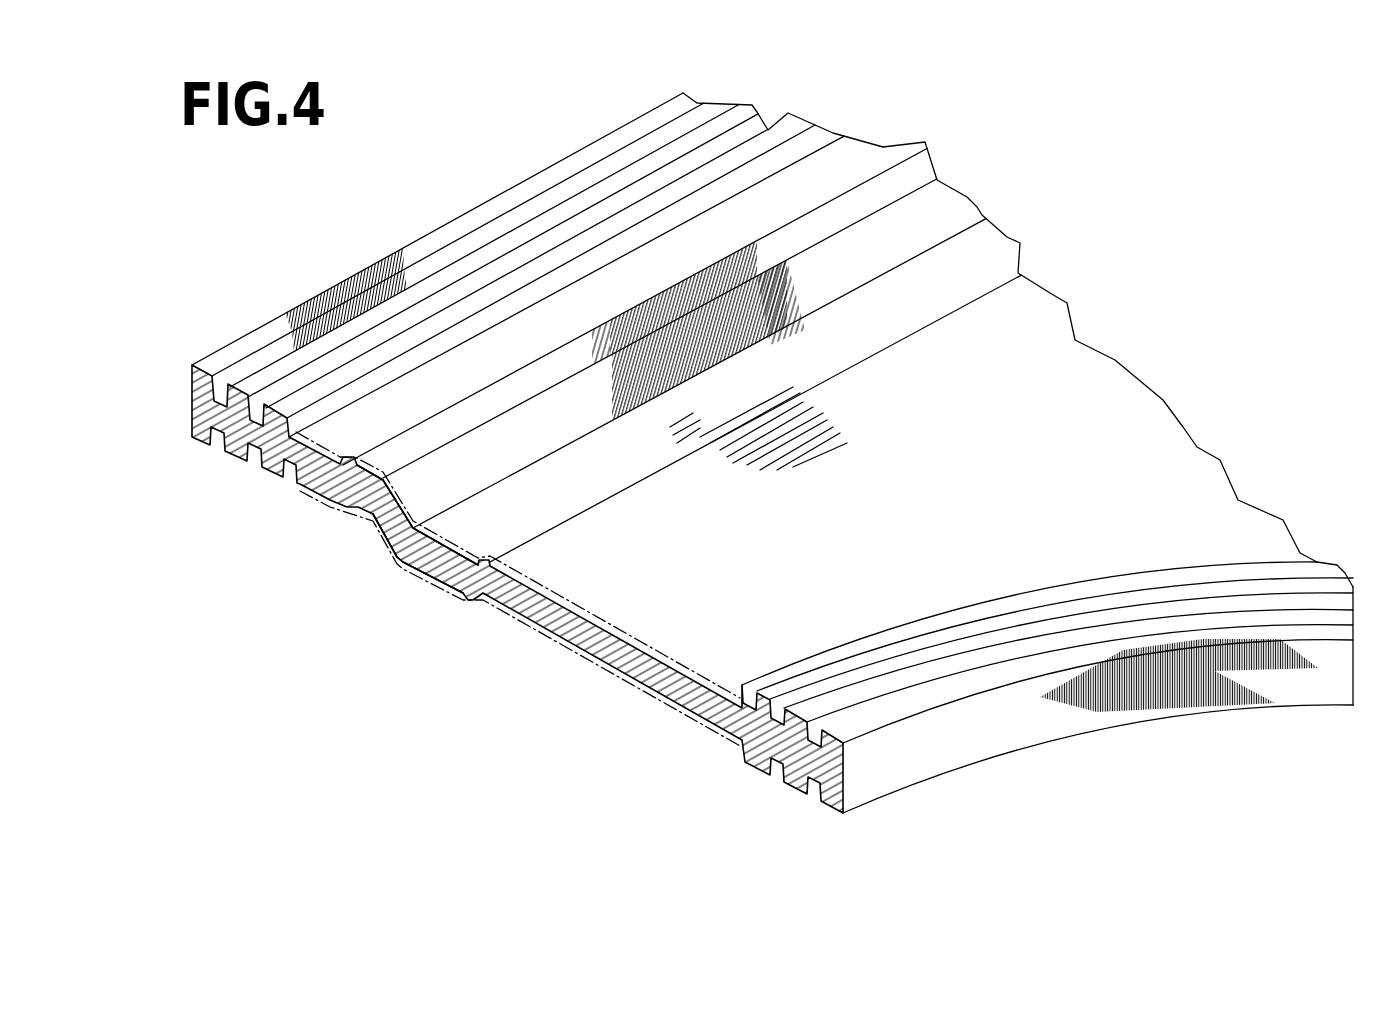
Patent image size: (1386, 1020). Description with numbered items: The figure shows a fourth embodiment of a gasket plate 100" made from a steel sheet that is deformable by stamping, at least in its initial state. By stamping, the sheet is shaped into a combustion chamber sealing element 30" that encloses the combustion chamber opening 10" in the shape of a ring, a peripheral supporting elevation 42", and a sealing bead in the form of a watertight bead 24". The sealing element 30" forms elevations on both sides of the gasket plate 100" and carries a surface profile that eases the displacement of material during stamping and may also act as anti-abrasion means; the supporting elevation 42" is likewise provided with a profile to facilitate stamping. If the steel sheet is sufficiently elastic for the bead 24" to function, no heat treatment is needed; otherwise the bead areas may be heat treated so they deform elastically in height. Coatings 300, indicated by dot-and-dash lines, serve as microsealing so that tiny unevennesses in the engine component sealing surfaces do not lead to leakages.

The supporting elevation 42 is at (452, 204).
The gasket plate 100 is at (1097, 323).
The coatings 300 is at (640, 645).
The watertight bead 24 is at (352, 535).
The combustion chamber sealing element 30 is at (947, 592).
The combustion chamber opening 10 is at (1011, 760).